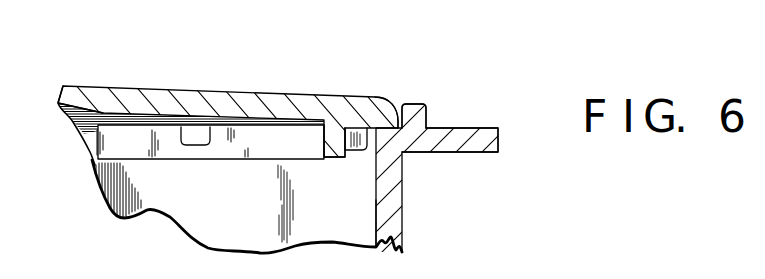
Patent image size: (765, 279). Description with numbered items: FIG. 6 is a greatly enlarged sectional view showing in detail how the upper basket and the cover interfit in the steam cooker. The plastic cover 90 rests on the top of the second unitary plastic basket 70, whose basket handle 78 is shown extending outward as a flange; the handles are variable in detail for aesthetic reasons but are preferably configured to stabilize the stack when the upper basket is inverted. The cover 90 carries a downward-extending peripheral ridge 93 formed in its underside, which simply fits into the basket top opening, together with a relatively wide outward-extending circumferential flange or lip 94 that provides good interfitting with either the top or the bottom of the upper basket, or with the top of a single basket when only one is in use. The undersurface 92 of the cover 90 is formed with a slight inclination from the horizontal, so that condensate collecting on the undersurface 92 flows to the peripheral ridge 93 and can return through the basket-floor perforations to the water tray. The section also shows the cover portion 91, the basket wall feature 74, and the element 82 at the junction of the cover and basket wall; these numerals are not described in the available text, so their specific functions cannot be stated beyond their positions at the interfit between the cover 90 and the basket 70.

The second unitary plastic basket 70 is at (433, 170).
The inner surface of frame member 74 is at (403, 220).
The basket handle 78 is at (498, 143).
The raised bead 82 is at (414, 102).
The plastic cover 90 is at (228, 115).
The cover plate 91 is at (88, 88).
The undersurface of the cover 92 is at (100, 128).
The downward-extending peripheral ridges 93 is at (337, 161).
The outward-extending circumferential flanges or lips 94 is at (392, 100).